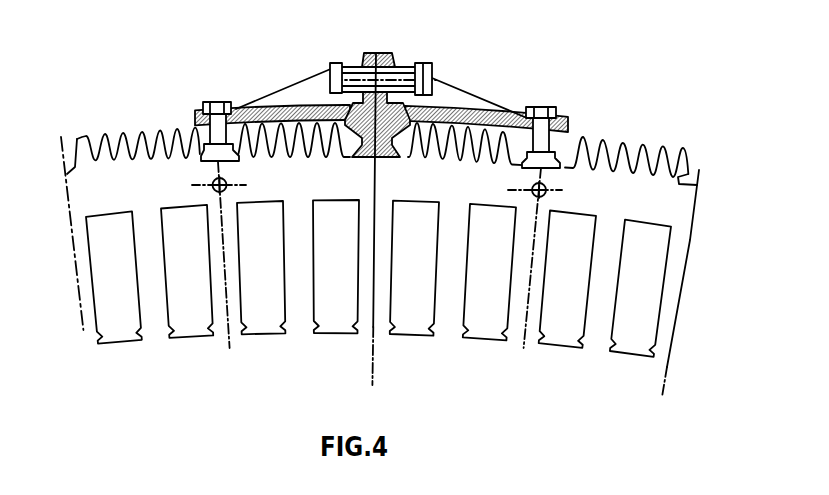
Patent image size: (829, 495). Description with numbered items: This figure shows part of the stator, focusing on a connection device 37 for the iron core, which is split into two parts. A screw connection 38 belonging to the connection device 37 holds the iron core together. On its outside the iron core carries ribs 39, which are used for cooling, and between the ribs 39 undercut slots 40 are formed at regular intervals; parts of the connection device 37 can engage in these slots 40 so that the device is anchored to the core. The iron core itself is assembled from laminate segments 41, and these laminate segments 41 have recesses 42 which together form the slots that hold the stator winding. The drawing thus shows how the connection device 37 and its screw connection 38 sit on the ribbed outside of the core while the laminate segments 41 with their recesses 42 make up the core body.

The connection device 37 is at (492, 86).
The screw connection 38 is at (410, 65).
The ribs 39 is at (640, 147).
The undercut slots 40 is at (193, 123).
The laminate segments 41 is at (657, 204).
The recesses 42 is at (257, 295).